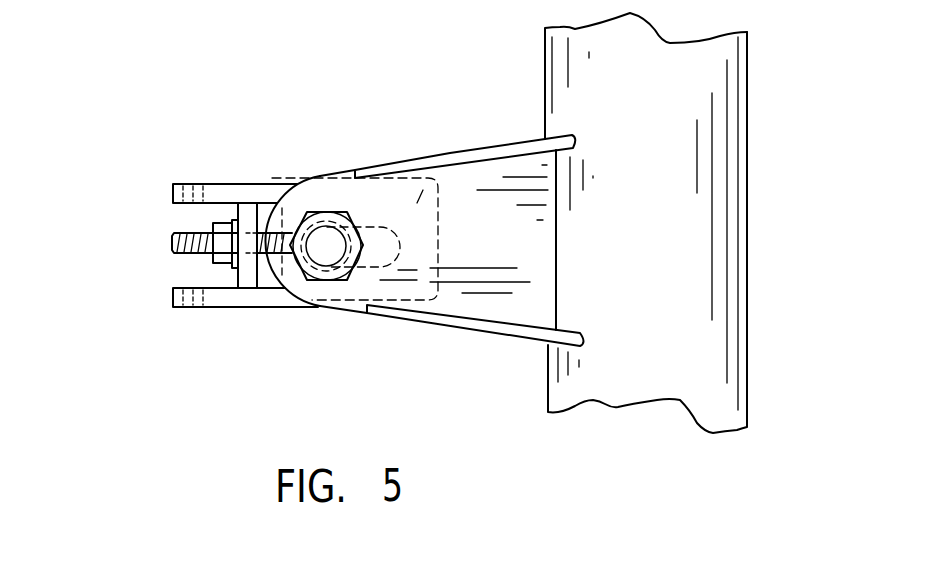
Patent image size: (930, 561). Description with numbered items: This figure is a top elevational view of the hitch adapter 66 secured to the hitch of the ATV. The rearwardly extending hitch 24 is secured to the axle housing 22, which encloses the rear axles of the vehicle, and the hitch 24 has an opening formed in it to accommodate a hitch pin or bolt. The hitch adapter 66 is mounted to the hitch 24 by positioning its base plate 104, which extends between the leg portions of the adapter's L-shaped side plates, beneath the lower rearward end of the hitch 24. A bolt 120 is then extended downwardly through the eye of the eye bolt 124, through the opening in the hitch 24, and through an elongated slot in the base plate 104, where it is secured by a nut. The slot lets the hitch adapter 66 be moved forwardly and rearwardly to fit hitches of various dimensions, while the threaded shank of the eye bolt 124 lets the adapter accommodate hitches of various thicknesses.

The axle housing 22 is at (722, 322).
The hitch 24 is at (448, 329).
The base plate 104 is at (441, 173).
The hitch adapter 66 is at (266, 308).
The bolt 120 is at (316, 208).
The eye bolt 124 is at (192, 228).